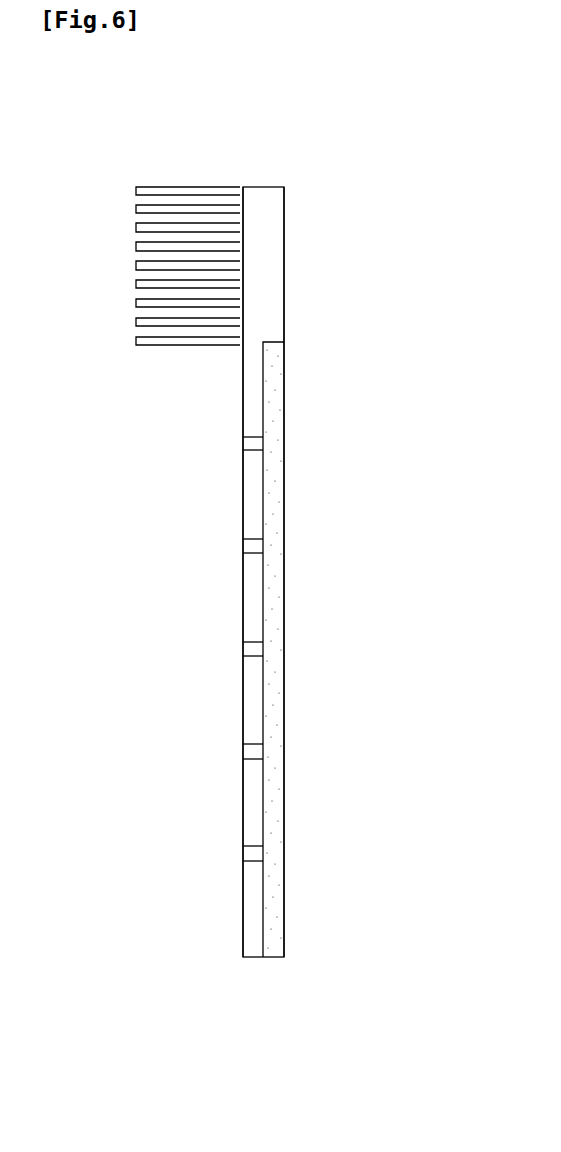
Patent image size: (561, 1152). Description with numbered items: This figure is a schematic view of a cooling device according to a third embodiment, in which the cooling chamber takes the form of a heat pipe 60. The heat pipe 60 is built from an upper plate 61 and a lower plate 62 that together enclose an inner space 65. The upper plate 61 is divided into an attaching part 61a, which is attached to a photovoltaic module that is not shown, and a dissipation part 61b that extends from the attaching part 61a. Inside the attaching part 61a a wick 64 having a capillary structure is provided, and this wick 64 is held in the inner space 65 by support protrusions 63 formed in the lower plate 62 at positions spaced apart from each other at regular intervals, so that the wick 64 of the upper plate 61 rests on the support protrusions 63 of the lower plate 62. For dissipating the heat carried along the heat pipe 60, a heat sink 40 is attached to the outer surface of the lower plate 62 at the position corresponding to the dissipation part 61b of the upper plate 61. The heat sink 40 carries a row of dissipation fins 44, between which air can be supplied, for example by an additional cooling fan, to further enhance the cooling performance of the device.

The heat pipe 60 is at (150, 136).
The heat sink 40 is at (243, 187).
The dissipation fins 44 is at (138, 252).
The upper plate 61 is at (386, 272).
The attaching part 61a is at (284, 487).
The dissipation part 61b is at (284, 266).
The lower plate 62 is at (247, 398).
The support protrusions 63 is at (247, 751).
The wick 64 is at (278, 706).
The inner space 65 is at (247, 605).